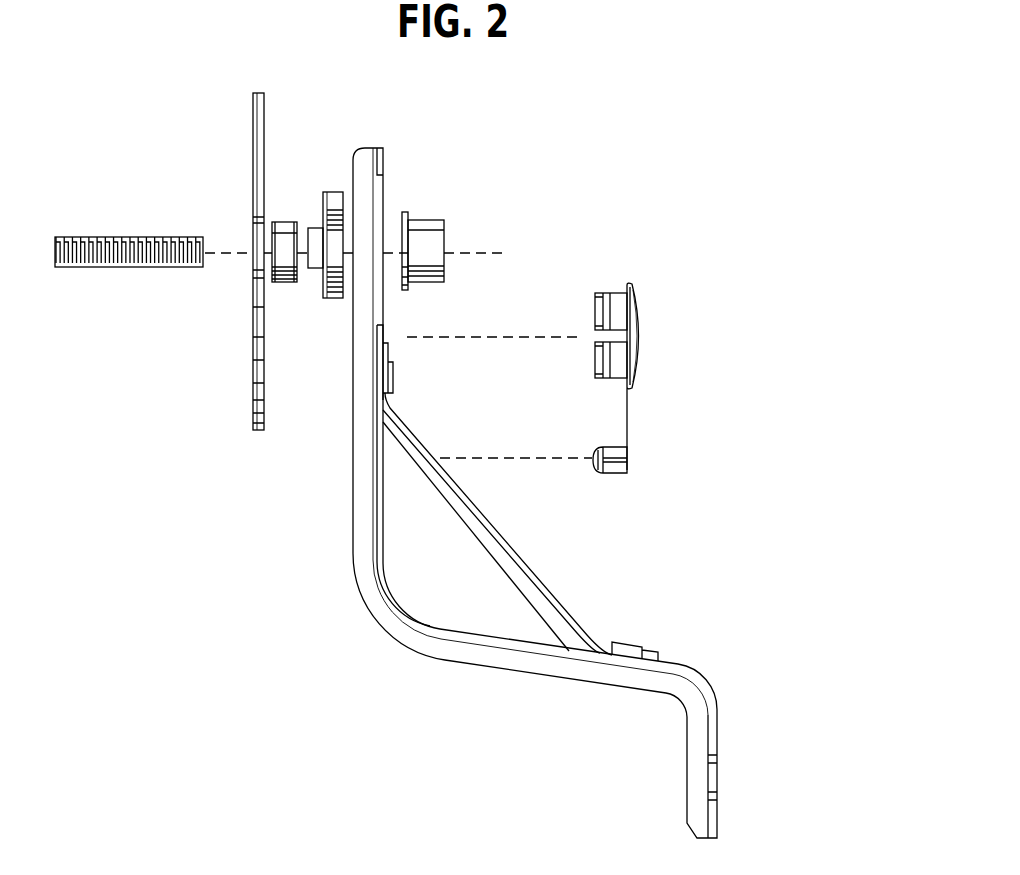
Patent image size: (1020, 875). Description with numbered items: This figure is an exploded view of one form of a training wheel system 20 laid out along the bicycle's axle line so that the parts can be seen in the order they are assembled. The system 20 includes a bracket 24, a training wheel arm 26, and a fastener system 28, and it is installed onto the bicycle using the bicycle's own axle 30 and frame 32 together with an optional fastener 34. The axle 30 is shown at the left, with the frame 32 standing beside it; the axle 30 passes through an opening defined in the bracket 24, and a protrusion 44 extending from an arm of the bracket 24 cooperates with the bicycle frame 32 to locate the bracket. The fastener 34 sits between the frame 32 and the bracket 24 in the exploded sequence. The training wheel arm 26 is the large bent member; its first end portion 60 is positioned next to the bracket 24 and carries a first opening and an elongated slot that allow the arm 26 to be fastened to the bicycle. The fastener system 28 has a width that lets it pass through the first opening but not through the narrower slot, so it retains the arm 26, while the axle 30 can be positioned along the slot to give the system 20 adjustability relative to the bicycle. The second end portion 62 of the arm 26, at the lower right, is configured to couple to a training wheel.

The training wheel system 20 is at (659, 179).
The bracket 24 is at (335, 192).
The training wheel arm 26 is at (353, 616).
The fastener system 28 is at (429, 201).
The axle 30 is at (143, 236).
The frame 32 is at (252, 157).
The fastener 34 is at (282, 283).
The protrusion 44 is at (317, 262).
The first end portion 60 is at (402, 151).
The second end portion 62 is at (736, 743).